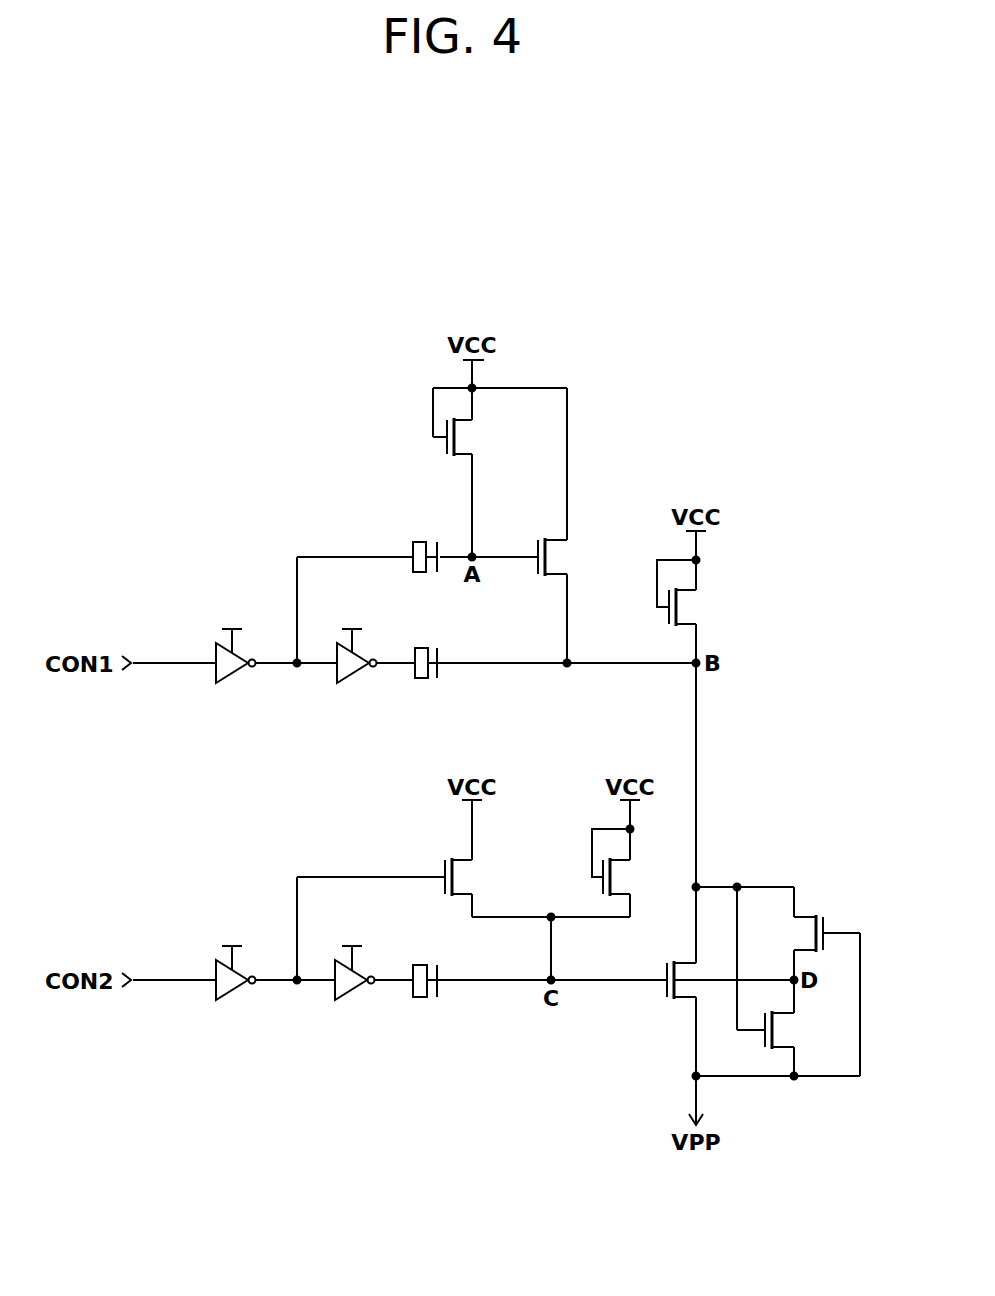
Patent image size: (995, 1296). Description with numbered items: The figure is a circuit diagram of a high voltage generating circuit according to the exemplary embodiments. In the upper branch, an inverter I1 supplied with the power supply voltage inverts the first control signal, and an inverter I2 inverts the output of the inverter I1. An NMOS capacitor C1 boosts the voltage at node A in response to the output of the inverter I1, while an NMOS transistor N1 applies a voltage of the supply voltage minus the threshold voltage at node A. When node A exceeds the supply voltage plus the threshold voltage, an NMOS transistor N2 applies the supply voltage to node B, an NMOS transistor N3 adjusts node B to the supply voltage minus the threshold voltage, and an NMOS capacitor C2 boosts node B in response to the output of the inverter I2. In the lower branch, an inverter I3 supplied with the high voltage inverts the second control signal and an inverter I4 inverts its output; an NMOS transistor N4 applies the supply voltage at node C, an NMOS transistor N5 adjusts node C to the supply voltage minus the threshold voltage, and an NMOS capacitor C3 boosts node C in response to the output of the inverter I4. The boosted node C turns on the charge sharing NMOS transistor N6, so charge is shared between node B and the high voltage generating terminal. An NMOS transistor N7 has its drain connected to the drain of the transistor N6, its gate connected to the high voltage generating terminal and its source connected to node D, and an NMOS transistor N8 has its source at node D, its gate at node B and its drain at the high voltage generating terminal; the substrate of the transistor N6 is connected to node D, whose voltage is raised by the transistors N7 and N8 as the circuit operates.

The NMOS transistor N1 is at (503, 437).
The NMOS transistor N2 is at (545, 557).
The NMOS transistor N3 is at (676, 607).
The NMOS transistor N4 is at (503, 877).
The NMOS transistor N5 is at (610, 877).
The charge sharing transistor N6 is at (692, 980).
The NMOS transistor N7 is at (816, 933).
The NMOS transistor N8 is at (825, 1030).
The inverter I1 is at (232, 677).
The inverter I2 is at (353, 677).
The inverter I3 is at (232, 994).
The inverter I4 is at (352, 994).
The NMOS capacitor C1 is at (418, 542).
The NMOS capacitor C2 is at (424, 680).
The NMOS capacitor C3 is at (424, 999).